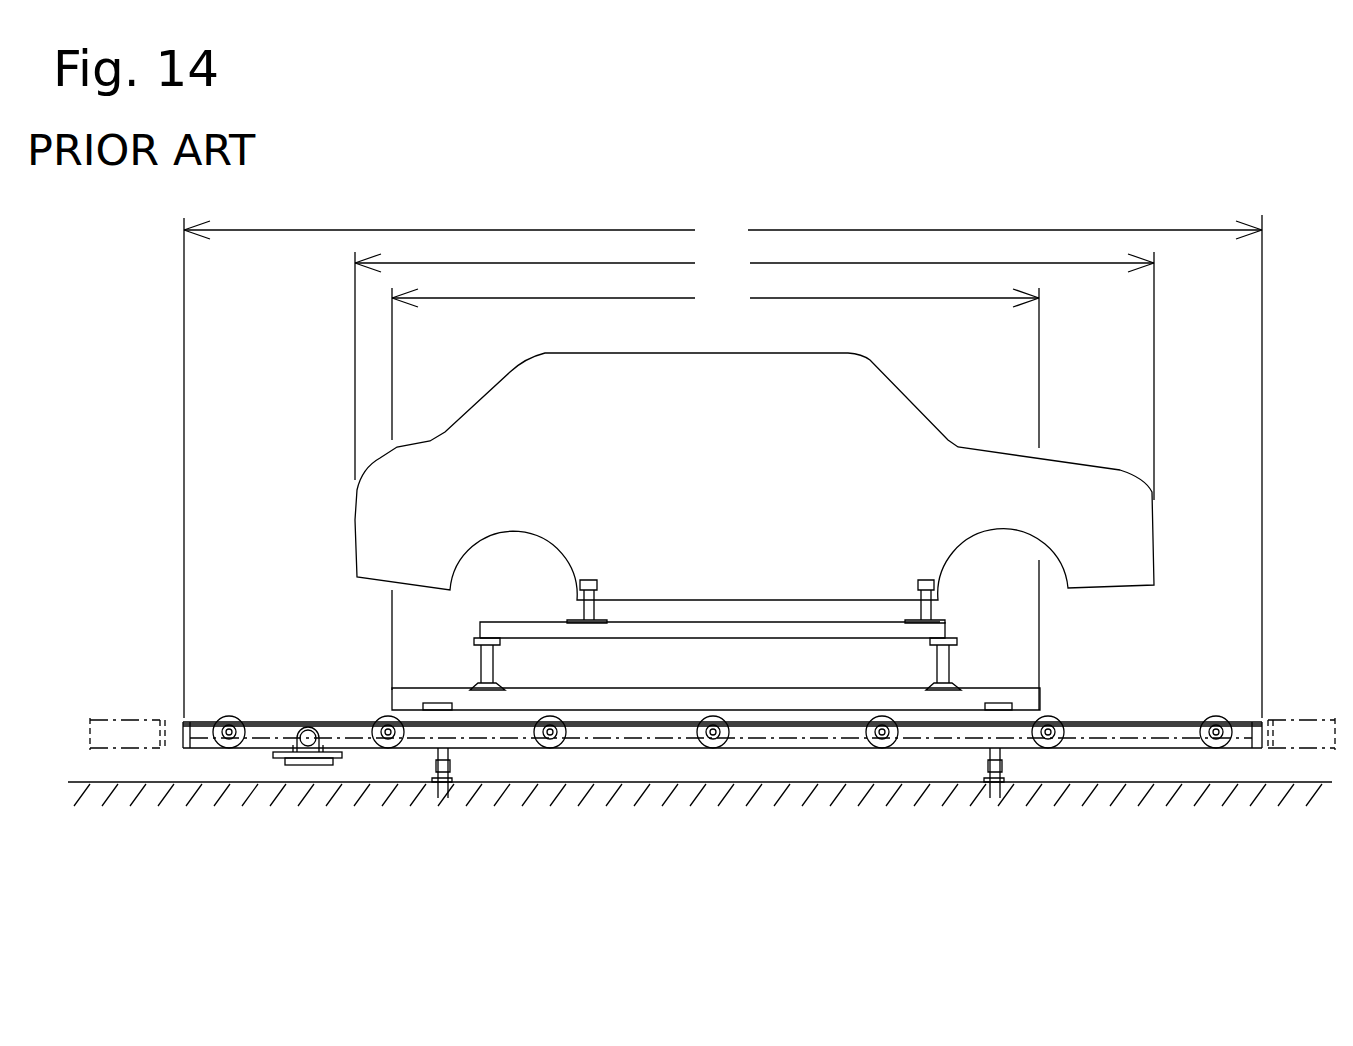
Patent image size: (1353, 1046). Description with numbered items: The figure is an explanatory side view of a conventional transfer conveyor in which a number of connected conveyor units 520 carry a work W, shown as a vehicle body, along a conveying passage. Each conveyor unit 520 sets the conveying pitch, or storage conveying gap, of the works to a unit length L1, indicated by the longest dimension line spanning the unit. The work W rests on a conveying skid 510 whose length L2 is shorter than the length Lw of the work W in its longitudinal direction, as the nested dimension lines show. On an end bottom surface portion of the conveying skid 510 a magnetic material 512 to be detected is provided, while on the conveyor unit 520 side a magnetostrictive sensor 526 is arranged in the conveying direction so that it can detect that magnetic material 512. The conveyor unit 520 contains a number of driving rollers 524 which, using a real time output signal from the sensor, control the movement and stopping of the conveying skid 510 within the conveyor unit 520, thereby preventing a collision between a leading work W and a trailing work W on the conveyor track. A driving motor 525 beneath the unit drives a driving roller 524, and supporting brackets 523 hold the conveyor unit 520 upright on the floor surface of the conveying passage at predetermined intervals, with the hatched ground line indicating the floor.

The work to be conveyed W is at (468, 412).
The unit length L1 is at (723, 465).
The length of the work Lw is at (754, 374).
The length of the conveying skid L2 is at (715, 497).
The conveying skid 510 is at (470, 662).
The magnetic material 512 is at (438, 690).
The conveyor unit 520 is at (120, 755).
The supporting bracket 523 is at (450, 757).
The driving roller 524 is at (215, 745).
The driving motor 525 is at (303, 768).
The magnetostrictive sensor 526 is at (1180, 722).